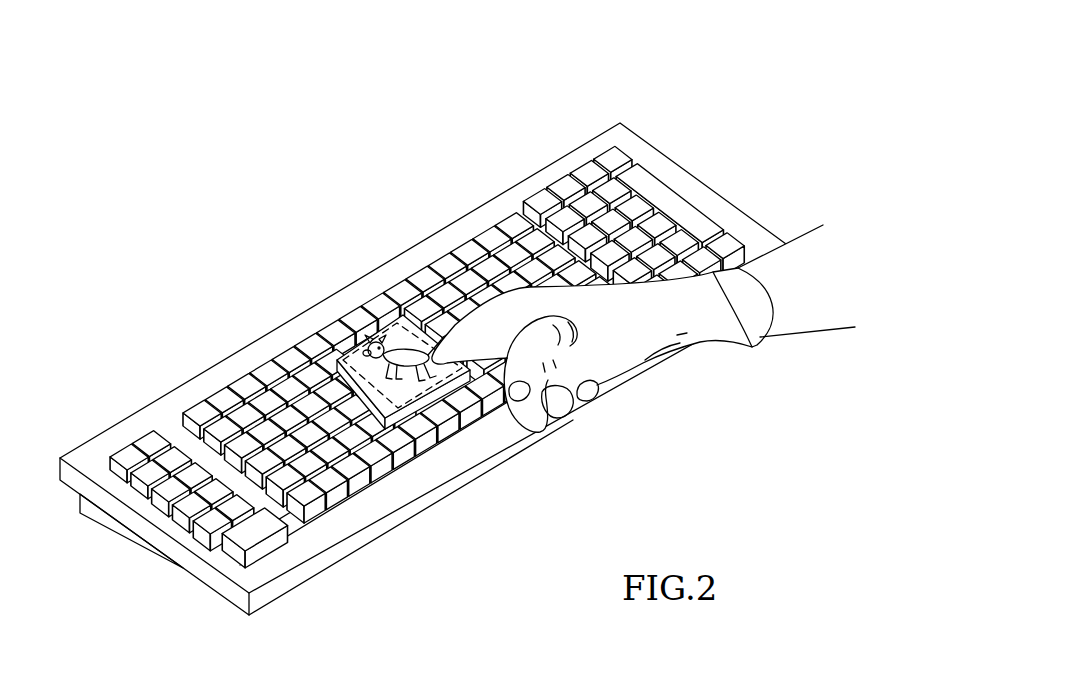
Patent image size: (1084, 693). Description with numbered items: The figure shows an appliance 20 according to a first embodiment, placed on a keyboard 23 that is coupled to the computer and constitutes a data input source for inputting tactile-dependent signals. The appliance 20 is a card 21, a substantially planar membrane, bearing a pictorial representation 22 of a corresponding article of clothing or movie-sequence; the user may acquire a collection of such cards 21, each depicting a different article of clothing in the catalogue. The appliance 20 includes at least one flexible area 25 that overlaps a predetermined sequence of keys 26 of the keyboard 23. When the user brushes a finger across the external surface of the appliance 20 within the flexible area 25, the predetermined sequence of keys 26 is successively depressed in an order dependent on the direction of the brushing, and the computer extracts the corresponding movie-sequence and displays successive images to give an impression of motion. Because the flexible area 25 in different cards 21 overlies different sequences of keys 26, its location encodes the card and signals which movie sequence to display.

The appliance 20 is at (427, 366).
The card 21 is at (421, 318).
The pictorial representation 22 is at (412, 395).
The keyboard 23 is at (656, 146).
The flexible area 25 is at (400, 306).
The keys 26 is at (222, 398).